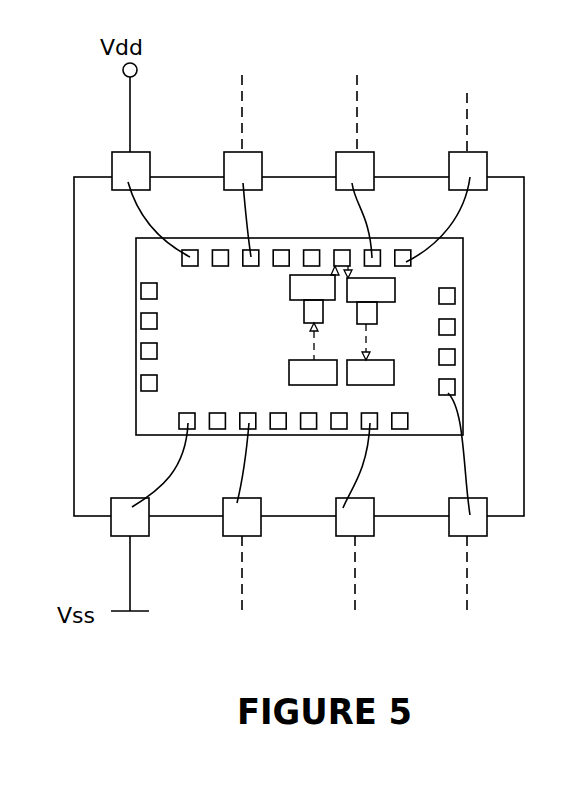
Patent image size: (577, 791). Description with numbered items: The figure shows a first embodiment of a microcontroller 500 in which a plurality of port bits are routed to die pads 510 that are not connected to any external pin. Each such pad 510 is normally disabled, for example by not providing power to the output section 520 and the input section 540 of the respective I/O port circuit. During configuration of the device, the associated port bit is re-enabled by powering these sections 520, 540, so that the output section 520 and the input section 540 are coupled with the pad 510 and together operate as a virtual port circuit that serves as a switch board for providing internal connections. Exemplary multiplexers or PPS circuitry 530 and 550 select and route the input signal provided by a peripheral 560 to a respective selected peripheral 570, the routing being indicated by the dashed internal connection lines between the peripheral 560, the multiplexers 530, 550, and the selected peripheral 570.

The microcontroller 500 is at (517, 310).
The die pad 510 is at (345, 262).
The output section 520 is at (296, 285).
The multiplexer or PPS circuitry 530 is at (310, 318).
The input section 540 is at (382, 290).
The multiplexer or PPS circuitry 550 is at (367, 318).
The peripheral 560 is at (313, 355).
The selected peripheral 570 is at (370, 355).